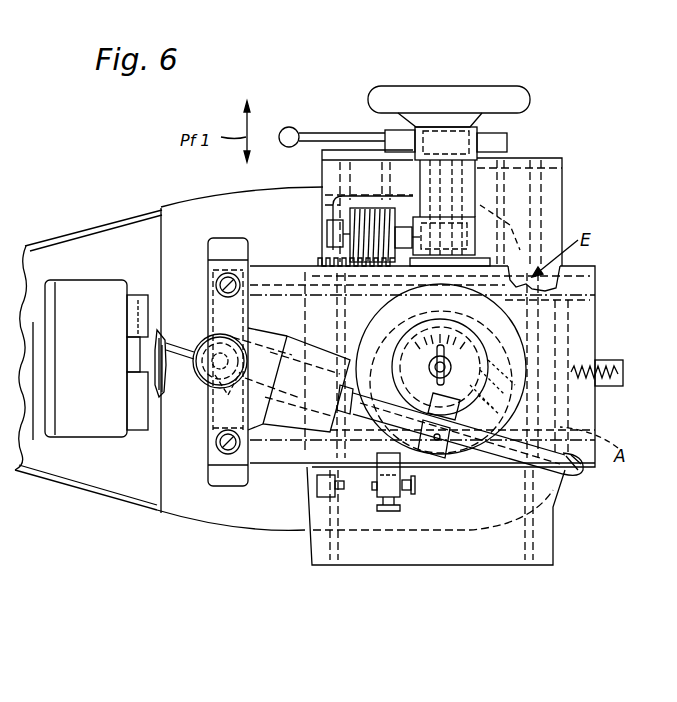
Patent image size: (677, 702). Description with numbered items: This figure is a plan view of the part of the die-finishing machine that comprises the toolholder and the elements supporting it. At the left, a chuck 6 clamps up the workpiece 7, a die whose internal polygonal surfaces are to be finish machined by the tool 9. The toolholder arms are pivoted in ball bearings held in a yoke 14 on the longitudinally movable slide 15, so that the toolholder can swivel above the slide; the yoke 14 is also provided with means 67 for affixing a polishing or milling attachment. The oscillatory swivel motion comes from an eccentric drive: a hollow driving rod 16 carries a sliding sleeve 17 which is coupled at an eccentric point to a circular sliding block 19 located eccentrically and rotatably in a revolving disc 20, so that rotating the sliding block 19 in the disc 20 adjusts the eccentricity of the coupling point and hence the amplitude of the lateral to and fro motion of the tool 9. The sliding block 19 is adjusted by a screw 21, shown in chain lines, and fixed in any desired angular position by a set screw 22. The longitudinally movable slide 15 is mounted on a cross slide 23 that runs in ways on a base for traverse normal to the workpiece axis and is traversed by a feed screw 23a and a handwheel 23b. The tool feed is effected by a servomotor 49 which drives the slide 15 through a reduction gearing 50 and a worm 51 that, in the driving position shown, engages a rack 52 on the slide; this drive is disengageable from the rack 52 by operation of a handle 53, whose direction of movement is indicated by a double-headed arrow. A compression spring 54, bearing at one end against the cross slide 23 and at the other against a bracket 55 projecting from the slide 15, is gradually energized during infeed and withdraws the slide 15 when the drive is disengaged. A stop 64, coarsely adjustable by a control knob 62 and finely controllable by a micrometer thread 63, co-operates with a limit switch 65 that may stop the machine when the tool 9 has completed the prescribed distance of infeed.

The chuck 6 is at (85, 430).
The workpiece 7 is at (146, 398).
The tool 9 is at (185, 356).
The yoke 14 is at (215, 300).
The longitudinally movable slide 15 is at (586, 276).
The driving rod 16 is at (516, 455).
The sliding sleeve 17 is at (470, 443).
The circular sliding block 19 is at (392, 455).
The disc 20 is at (498, 332).
The screw 21 is at (507, 349).
The set screw 22 is at (436, 366).
The cross slide 23 is at (553, 178).
The feed screw 23a is at (508, 148).
The handwheel 23b is at (481, 94).
The servomotor 49 is at (472, 188).
The reduction gearing 50 is at (473, 231).
The worm 51 is at (355, 210).
The rack 52 is at (318, 264).
The handle 53 is at (320, 133).
The compression spring 54 is at (602, 386).
The bracket 55 is at (620, 372).
The control knob 62 is at (388, 512).
The micrometer thread 63 is at (407, 488).
The stop 64 is at (383, 490).
The limit switch 65 is at (323, 486).
The means for affixing a polishing or milling attachment 67 is at (222, 400).